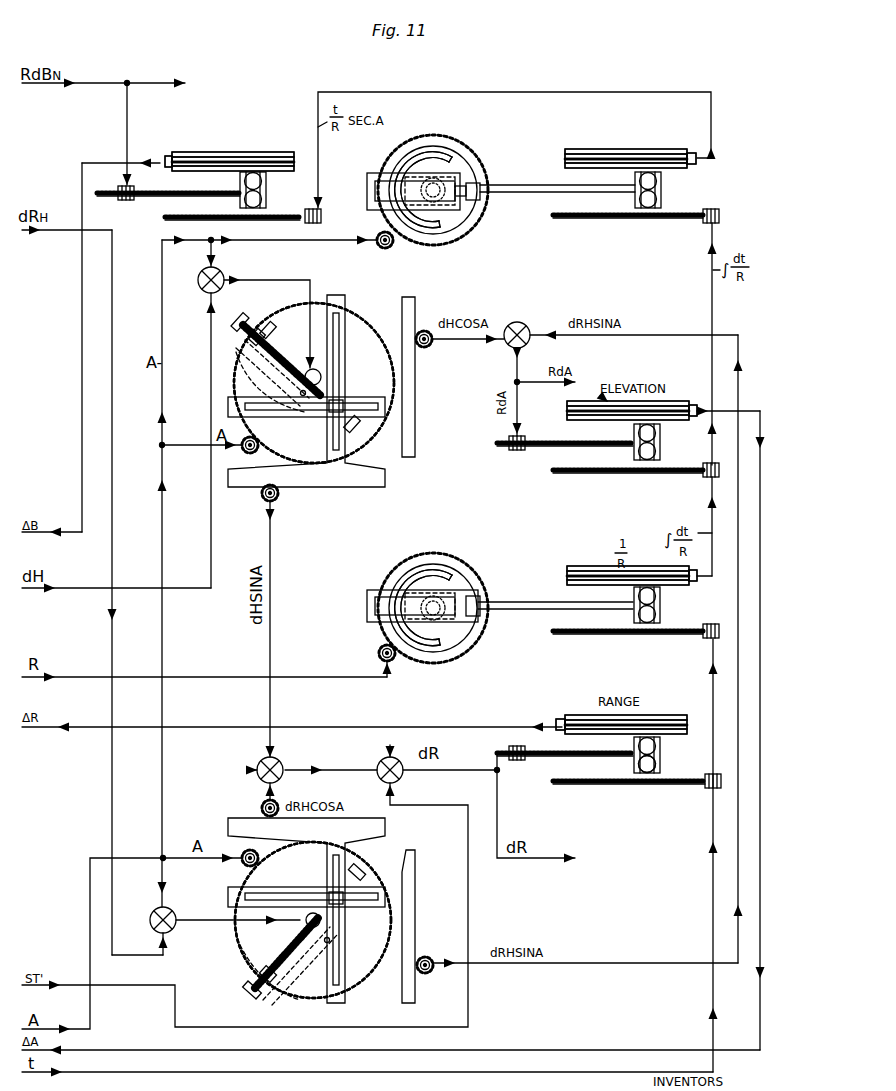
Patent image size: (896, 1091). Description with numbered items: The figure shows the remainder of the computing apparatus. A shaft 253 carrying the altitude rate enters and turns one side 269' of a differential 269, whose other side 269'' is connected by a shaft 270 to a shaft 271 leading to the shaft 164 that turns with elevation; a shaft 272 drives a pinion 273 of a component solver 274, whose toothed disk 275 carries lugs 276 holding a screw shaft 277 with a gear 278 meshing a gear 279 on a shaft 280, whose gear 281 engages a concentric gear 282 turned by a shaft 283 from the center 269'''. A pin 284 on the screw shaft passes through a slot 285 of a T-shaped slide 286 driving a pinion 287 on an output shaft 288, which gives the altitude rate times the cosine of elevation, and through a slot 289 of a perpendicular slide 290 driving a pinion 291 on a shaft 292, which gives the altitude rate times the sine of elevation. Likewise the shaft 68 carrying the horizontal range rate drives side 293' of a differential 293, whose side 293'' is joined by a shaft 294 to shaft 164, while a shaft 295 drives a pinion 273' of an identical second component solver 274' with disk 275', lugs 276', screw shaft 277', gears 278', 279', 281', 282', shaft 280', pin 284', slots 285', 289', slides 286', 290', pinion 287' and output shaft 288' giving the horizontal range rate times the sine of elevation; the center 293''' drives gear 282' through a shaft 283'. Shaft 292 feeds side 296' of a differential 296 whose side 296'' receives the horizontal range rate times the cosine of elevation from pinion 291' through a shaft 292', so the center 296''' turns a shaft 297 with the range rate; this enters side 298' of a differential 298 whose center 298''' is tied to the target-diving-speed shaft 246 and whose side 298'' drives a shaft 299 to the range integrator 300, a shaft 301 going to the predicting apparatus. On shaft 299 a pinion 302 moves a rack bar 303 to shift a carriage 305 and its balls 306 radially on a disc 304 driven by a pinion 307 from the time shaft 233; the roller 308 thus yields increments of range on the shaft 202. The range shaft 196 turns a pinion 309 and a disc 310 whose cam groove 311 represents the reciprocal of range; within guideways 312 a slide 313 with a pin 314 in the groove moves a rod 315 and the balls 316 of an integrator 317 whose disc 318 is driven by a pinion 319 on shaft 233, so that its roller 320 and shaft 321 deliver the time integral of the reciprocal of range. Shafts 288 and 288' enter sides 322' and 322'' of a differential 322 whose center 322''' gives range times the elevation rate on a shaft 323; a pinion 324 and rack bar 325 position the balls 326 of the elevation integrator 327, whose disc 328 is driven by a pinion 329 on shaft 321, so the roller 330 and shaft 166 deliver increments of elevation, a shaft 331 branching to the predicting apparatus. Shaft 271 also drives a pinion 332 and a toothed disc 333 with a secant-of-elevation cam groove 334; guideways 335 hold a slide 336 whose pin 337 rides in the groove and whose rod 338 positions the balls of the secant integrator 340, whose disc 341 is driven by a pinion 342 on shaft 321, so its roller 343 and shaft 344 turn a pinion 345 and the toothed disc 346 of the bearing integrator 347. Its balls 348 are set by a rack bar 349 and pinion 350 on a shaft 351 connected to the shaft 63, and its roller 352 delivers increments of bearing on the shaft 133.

The shaft 63 is at (113, 84).
The shaft 351 is at (128, 103).
The shaft 133 is at (100, 163).
The roller 352 is at (178, 152).
The bearing integrator 347 is at (280, 142).
The pinion 350 is at (118, 192).
The rack bar 349 is at (344, 189).
The balls 348 is at (268, 190).
The toothed disc 346 is at (165, 217).
The pinion 345 is at (322, 216).
The shaft 344 is at (520, 92).
The toothed disc 333 is at (433, 247).
The cam groove 334 is at (447, 218).
The guideways 335 is at (370, 175).
The slide 336 is at (481, 186).
The pin 337 is at (468, 184).
The rod 338 is at (500, 193).
The pinion 332 is at (378, 244).
The secant integrator 340 is at (644, 146).
The roller 343 is at (578, 149).
The balls / pinion 329 is at (661, 186).
The disc 341 is at (600, 218).
The pinion 342 is at (720, 214).
The shaft 321 is at (713, 291).
The differential 322 is at (621, 320).
The side of differential 322' is at (617, 627).
The side of differential 322'' is at (553, 351).
The center of differential 322''' is at (492, 358).
The pinion 287 is at (432, 326).
The output shaft 288 is at (468, 350).
The shaft 331 is at (520, 383).
The shaft 323 is at (518, 405).
The rack bar 325 is at (540, 440).
The pinion 324 is at (510, 449).
The elevation integrator 327 is at (632, 399).
The roller 330 is at (620, 421).
The shaft 166 is at (747, 410).
The balls 326 is at (660, 437).
The disc 328 is at (560, 473).
The roller 320 is at (590, 566).
The integrator 317 is at (651, 564).
The balls 316 is at (661, 600).
The rod 315 is at (553, 611).
The disc 318 is at (588, 635).
The pinion 319 is at (703, 636).
The shaft 233 is at (76, 1083).
The rotatable disc 310 is at (430, 672).
The cam groove 311 is at (450, 636).
The fixed guideways 312 is at (385, 590).
The slide 313 is at (493, 603).
The pin 314 is at (470, 598).
The pinion 309 is at (378, 655).
The shaft 196 is at (78, 677).
The shaft 202 is at (84, 727).
The range integrator 300 is at (653, 713).
The roller 308 is at (570, 715).
The carriage 305 is at (661, 752).
The rack bar 303 is at (548, 759).
The pinion 302 is at (515, 747).
The disc 304 is at (590, 786).
The balls 306 is at (650, 772).
The pinion 307 is at (706, 787).
The shaft 299 is at (449, 770).
The shaft 301 is at (498, 820).
The differential 298 is at (387, 754).
The side of differential 298' is at (362, 781).
The side of differential 298'' is at (433, 744).
The center of differential 298''' is at (424, 786).
The shaft 297 is at (340, 766).
The differential 296 is at (249, 770).
The side of differential 296' is at (297, 741).
The side of differential 296'' is at (305, 784).
The center of differential 296''' is at (307, 756).
The shaft 292' is at (246, 790).
The pinion 291' is at (247, 809).
The second output shaft 292 is at (287, 629).
The pinion 291 is at (252, 501).
The shaft 246 is at (468, 858).
The component solver 274 is at (314, 366).
The peripherally toothed disk 275 is at (316, 380).
The T-shaped slide 290 is at (306, 406).
The slot 289 is at (310, 381).
The T-shaped slide 286 is at (430, 377).
The slot 285 is at (306, 394).
The gear 282 is at (343, 365).
The gear 281 is at (283, 414).
The pin 284 is at (316, 424).
The gear 278 is at (280, 339).
The gear 279 is at (238, 323).
The shaft 280 is at (260, 372).
The screw shaft 277 is at (270, 382).
The lugs 276 is at (329, 389).
The shaft 283 is at (271, 312).
The pinion 273 is at (237, 453).
The shaft 272 is at (162, 444).
The differential 269 is at (269, 265).
The side of differential 269' is at (192, 440).
The side of differential 269'' is at (189, 255).
The center of differential 269''' is at (252, 266).
The shaft 270 is at (214, 248).
The shaft 271 is at (162, 274).
The shaft 164 is at (137, 858).
The shaft 295 is at (164, 876).
The shaft 294 is at (162, 884).
The differential 293 is at (176, 908).
The side of differential 293' is at (187, 954).
The side of differential 293'' is at (139, 904).
The center of differential 293''' is at (203, 911).
The shaft 283' is at (238, 929).
The shaft 68 is at (70, 232).
The shaft 253 is at (78, 584).
The second component solver 274' is at (313, 934).
The disk 275' is at (299, 920).
The T-shaped slide 290' is at (329, 910).
The slot 289' is at (368, 928).
The T-shaped slide 286' is at (432, 926).
The slot 285' is at (306, 886).
The gear 282' is at (281, 915).
The gear 281' is at (356, 944).
The pin 284' is at (358, 914).
The gear 278' is at (260, 960).
The gear 279' is at (247, 996).
The shaft 280' is at (300, 966).
The screw shaft 277' is at (241, 968).
The lugs 276' is at (356, 872).
The pinion 287' is at (438, 980).
The output shaft 288' is at (585, 972).
The pinion 273' is at (243, 849).